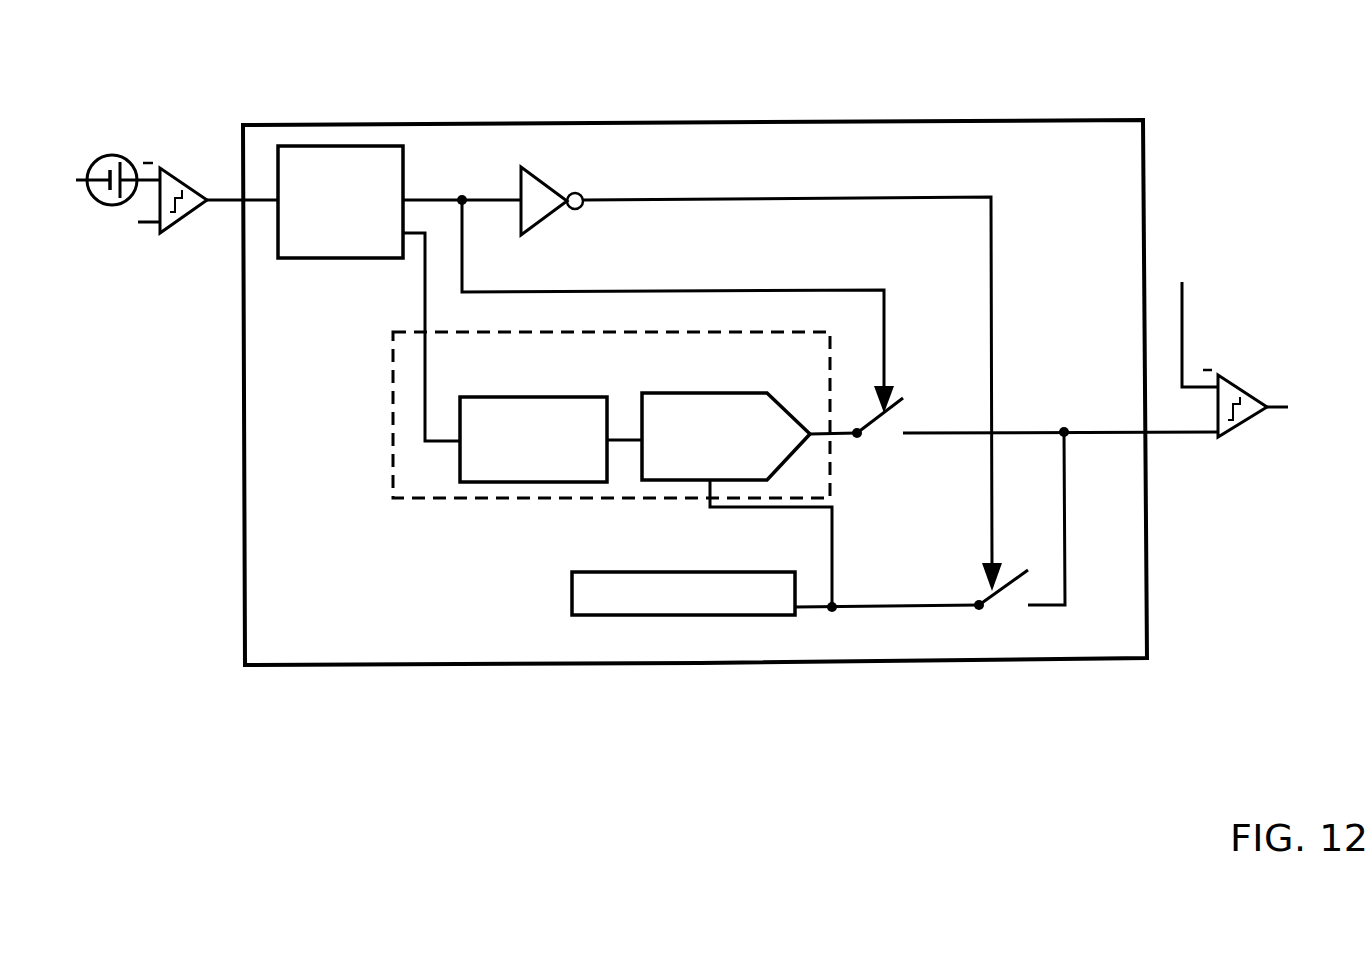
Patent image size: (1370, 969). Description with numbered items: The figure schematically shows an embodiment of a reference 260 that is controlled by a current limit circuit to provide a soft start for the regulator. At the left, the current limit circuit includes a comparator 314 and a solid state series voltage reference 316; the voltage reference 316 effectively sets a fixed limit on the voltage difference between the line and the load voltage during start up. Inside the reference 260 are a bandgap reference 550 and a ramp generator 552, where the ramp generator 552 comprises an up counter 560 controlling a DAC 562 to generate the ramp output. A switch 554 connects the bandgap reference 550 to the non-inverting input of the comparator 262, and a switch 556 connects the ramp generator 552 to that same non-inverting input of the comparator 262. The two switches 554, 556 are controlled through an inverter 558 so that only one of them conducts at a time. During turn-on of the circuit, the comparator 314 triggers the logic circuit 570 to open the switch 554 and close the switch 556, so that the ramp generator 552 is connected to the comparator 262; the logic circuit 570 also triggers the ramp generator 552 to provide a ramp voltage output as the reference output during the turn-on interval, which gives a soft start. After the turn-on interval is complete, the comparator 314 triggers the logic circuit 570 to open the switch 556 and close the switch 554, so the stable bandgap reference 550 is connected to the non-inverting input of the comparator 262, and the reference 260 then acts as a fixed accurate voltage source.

The reference 260 is at (243, 350).
The solid state series voltage reference 316 is at (106, 158).
The comparator 314 is at (178, 224).
The logic circuit 570 is at (337, 146).
The inverter 558 is at (542, 178).
The ramp generator 552 is at (571, 441).
The up counter 560 is at (503, 482).
The DAC 562 is at (655, 482).
The bandgap reference 550 is at (577, 615).
The switch 556 is at (870, 432).
The switch 554 is at (994, 598).
The comparator 262 is at (1228, 436).